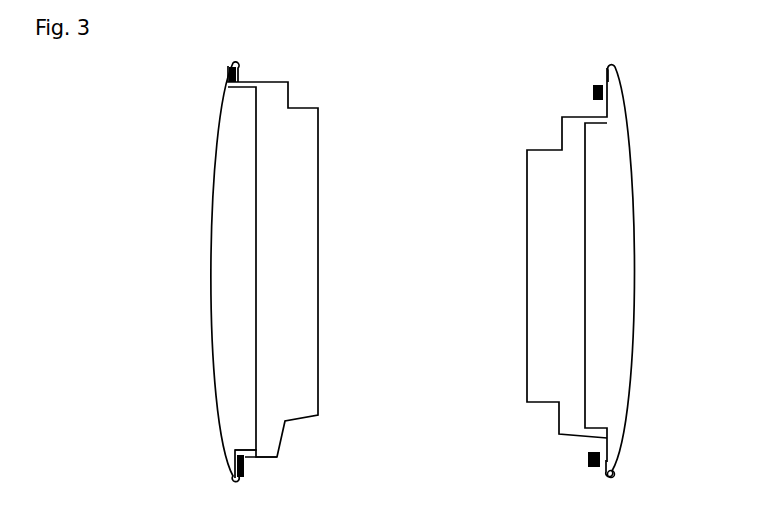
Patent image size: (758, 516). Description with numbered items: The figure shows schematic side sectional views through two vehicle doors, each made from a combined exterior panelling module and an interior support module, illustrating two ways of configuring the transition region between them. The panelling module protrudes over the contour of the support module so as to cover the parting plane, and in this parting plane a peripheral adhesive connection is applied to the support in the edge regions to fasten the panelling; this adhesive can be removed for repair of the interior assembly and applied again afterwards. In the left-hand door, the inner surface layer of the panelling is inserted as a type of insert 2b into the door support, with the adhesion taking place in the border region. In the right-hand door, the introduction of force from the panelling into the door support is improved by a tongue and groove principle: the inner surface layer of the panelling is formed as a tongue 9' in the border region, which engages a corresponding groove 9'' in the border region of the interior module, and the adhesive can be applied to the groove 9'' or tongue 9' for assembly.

The insert 2b is at (257, 456).
The tongue 9' is at (640, 468).
The groove 9'' is at (561, 454).